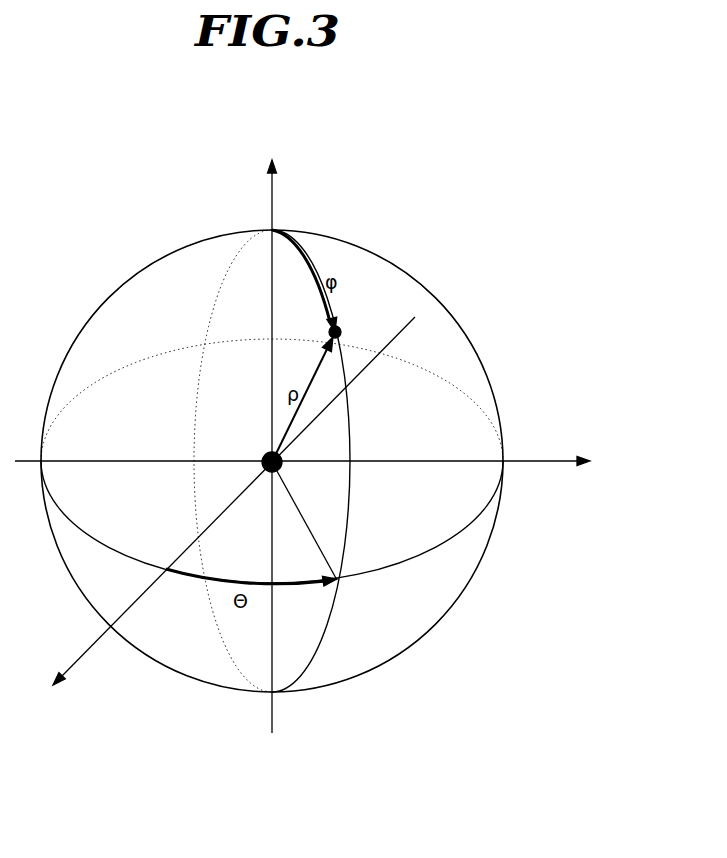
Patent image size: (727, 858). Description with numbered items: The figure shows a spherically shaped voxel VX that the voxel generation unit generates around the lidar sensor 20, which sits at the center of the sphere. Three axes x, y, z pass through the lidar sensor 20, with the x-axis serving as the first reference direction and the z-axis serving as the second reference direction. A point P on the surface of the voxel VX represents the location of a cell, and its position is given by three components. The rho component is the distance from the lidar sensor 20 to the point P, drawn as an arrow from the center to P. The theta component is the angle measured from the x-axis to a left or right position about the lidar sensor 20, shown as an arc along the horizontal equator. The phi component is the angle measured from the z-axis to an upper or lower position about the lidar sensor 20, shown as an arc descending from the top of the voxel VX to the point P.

The lidar sensor 20 is at (265, 452).
The voxel VX is at (467, 320).
The point P on sphere surface P is at (343, 331).
The x axis x is at (224, 510).
The y axis y is at (310, 461).
The z axis z is at (271, 435).